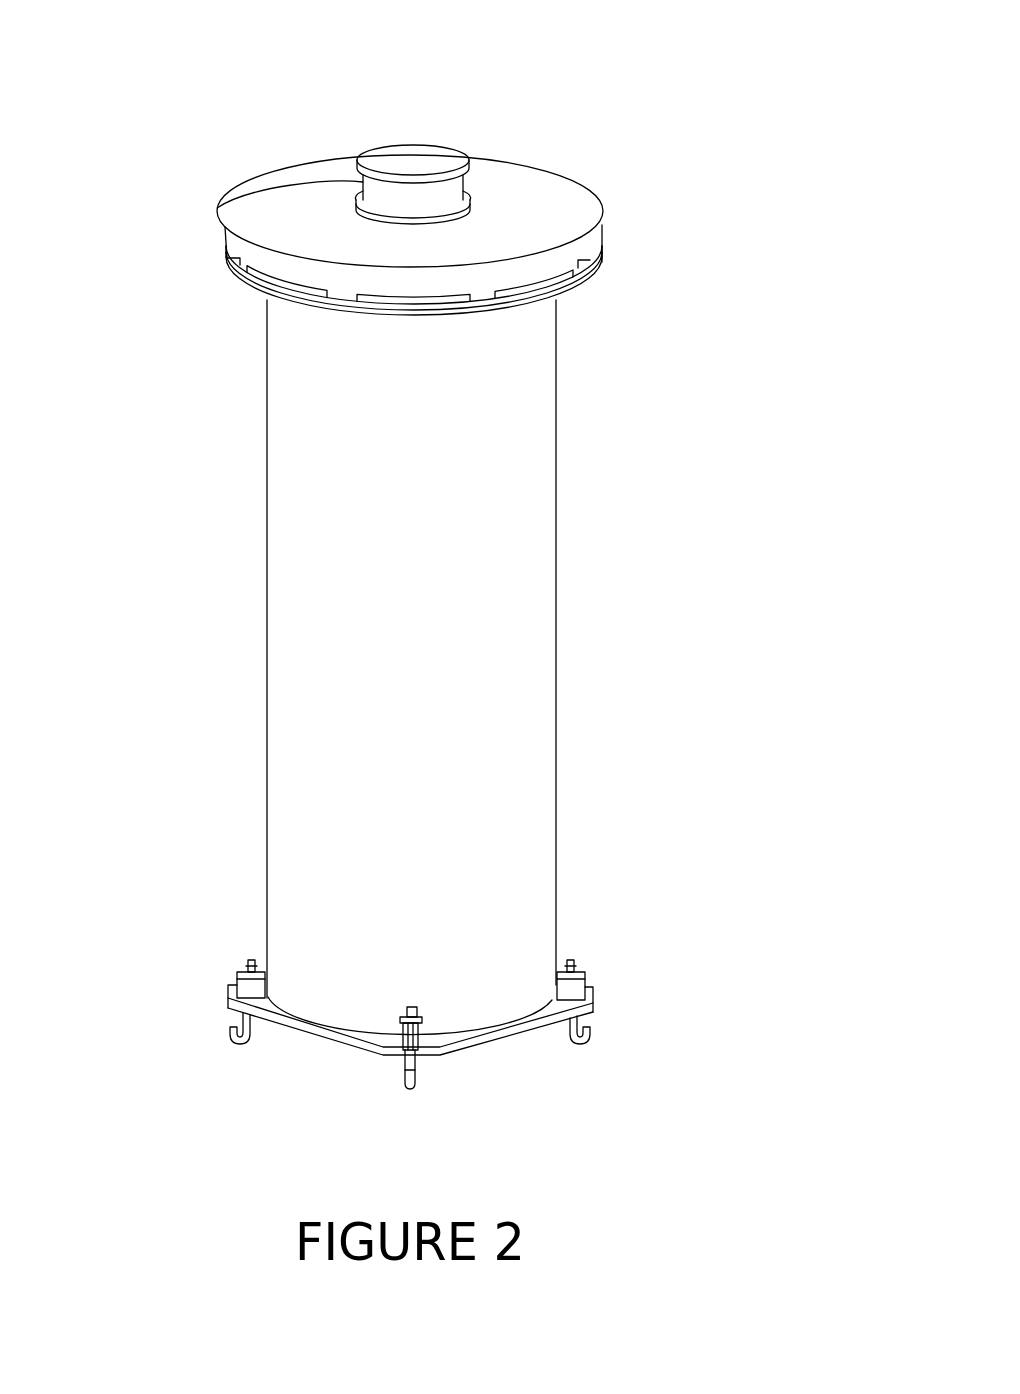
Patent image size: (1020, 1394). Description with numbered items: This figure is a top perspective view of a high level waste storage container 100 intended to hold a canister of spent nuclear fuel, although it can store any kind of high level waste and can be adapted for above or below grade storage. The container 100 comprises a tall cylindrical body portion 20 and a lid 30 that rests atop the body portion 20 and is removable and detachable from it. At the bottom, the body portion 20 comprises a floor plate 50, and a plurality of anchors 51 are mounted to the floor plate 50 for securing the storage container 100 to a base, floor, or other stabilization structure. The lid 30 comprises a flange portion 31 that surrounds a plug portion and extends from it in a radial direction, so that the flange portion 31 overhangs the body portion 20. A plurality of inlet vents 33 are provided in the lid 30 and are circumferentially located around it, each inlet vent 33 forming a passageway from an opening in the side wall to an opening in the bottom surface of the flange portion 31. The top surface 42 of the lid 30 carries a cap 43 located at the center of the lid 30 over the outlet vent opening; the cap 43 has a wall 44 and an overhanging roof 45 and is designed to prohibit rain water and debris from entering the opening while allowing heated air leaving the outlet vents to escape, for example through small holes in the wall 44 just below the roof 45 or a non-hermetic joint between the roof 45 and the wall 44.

The HLW storage container 100 is at (688, 81).
The body portion 20 is at (580, 610).
The lid 30 is at (630, 228).
The flange portion 31 is at (582, 317).
The inlet vents 33 is at (247, 276).
The top surface 42 is at (528, 180).
The cap 43 is at (471, 131).
The wall 44 is at (217, 207).
The roof 45 is at (386, 150).
The floor plate 50 is at (480, 1045).
The anchors 51 is at (240, 1018).